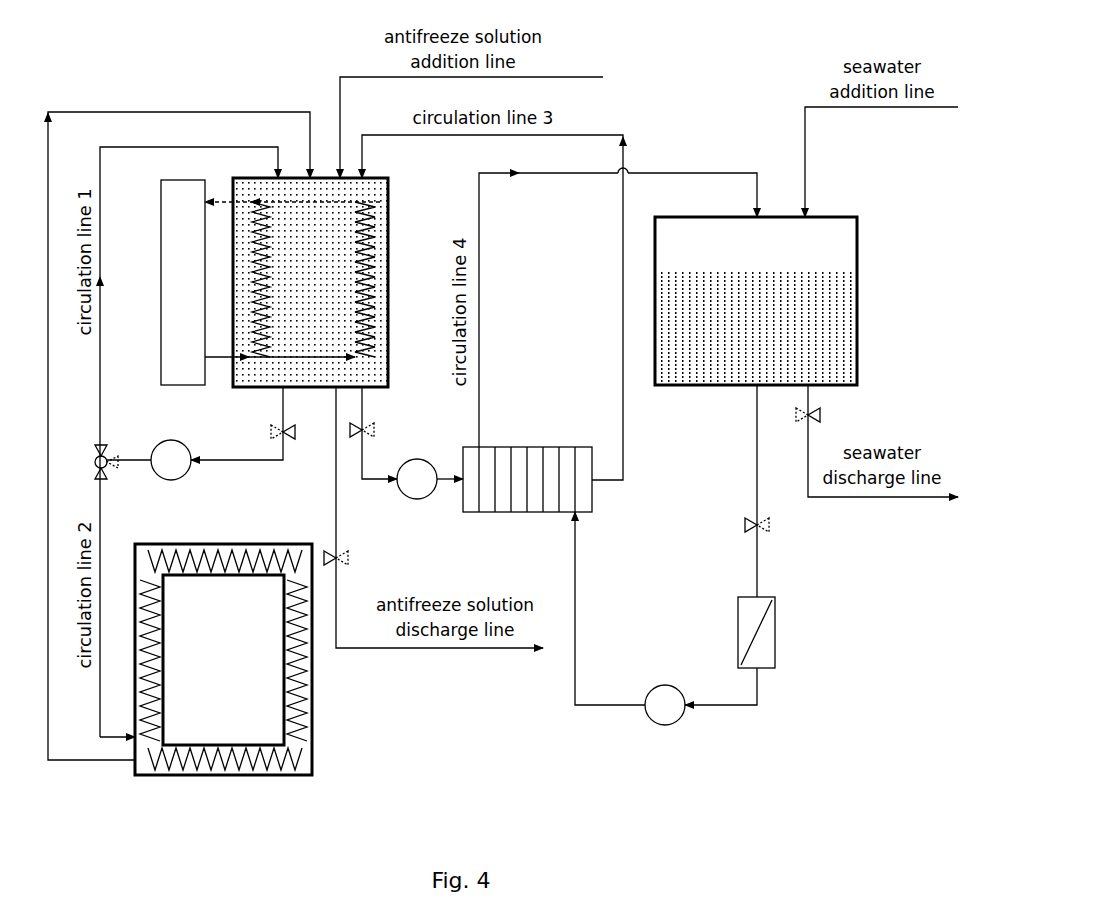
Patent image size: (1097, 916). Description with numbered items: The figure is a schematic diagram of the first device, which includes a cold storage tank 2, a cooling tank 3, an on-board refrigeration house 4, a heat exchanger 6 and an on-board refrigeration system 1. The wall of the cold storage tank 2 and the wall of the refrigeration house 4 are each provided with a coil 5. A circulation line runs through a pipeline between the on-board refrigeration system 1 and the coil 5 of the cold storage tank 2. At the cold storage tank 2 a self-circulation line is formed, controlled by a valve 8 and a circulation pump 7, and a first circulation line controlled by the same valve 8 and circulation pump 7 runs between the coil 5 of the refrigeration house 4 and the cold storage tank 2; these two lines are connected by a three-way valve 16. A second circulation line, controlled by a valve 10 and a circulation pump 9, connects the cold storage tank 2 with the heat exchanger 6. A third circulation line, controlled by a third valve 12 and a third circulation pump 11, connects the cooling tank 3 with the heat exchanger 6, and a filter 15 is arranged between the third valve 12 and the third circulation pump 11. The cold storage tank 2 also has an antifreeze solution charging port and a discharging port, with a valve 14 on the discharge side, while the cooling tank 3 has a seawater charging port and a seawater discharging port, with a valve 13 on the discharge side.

The on-board refrigeration system 1 is at (183, 282).
The cold storage tank 2 is at (296, 282).
The cooling tank 3 is at (756, 301).
The refrigeration house 4 is at (223, 659).
The coil 5 is at (392, 207).
The heat exchanger 6 is at (527, 492).
The circulation pump 7 is at (171, 460).
The valve 8 is at (292, 432).
The circulation pump 9 is at (417, 479).
The valve 10 is at (378, 430).
The third circulation pump 11 is at (665, 705).
The third valve 12 is at (770, 525).
The valve 13 is at (821, 415).
The valve 14 is at (351, 558).
The filter 15 is at (773, 632).
The three-way valve 16 is at (91, 462).